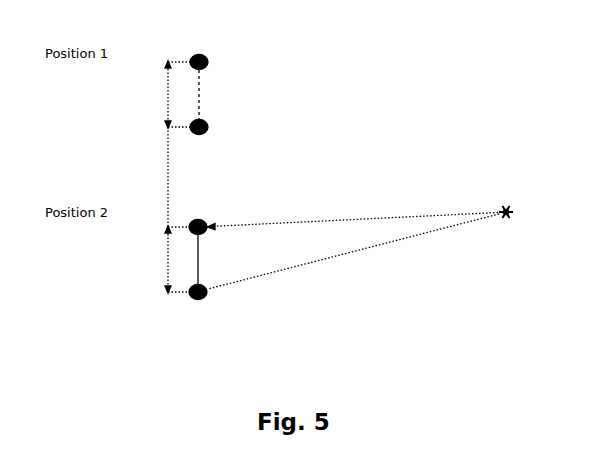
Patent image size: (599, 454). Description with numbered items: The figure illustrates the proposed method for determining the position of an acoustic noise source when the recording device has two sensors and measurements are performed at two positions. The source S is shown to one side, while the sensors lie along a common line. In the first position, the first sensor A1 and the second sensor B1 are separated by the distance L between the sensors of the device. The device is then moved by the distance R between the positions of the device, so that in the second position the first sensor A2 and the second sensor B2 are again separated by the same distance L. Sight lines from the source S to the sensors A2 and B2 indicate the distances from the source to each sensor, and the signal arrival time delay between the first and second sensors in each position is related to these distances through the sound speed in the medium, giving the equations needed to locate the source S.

The first sensor in the first position A1 is at (200, 52).
The second sensor in the first position B1 is at (200, 115).
The first sensor in the second position A2 is at (200, 218).
The second sensor in the second position B2 is at (200, 281).
The source S is at (360, 236).
The distance between sensors of the device L is at (173, 177).
The distance between positions of the device R is at (156, 177).